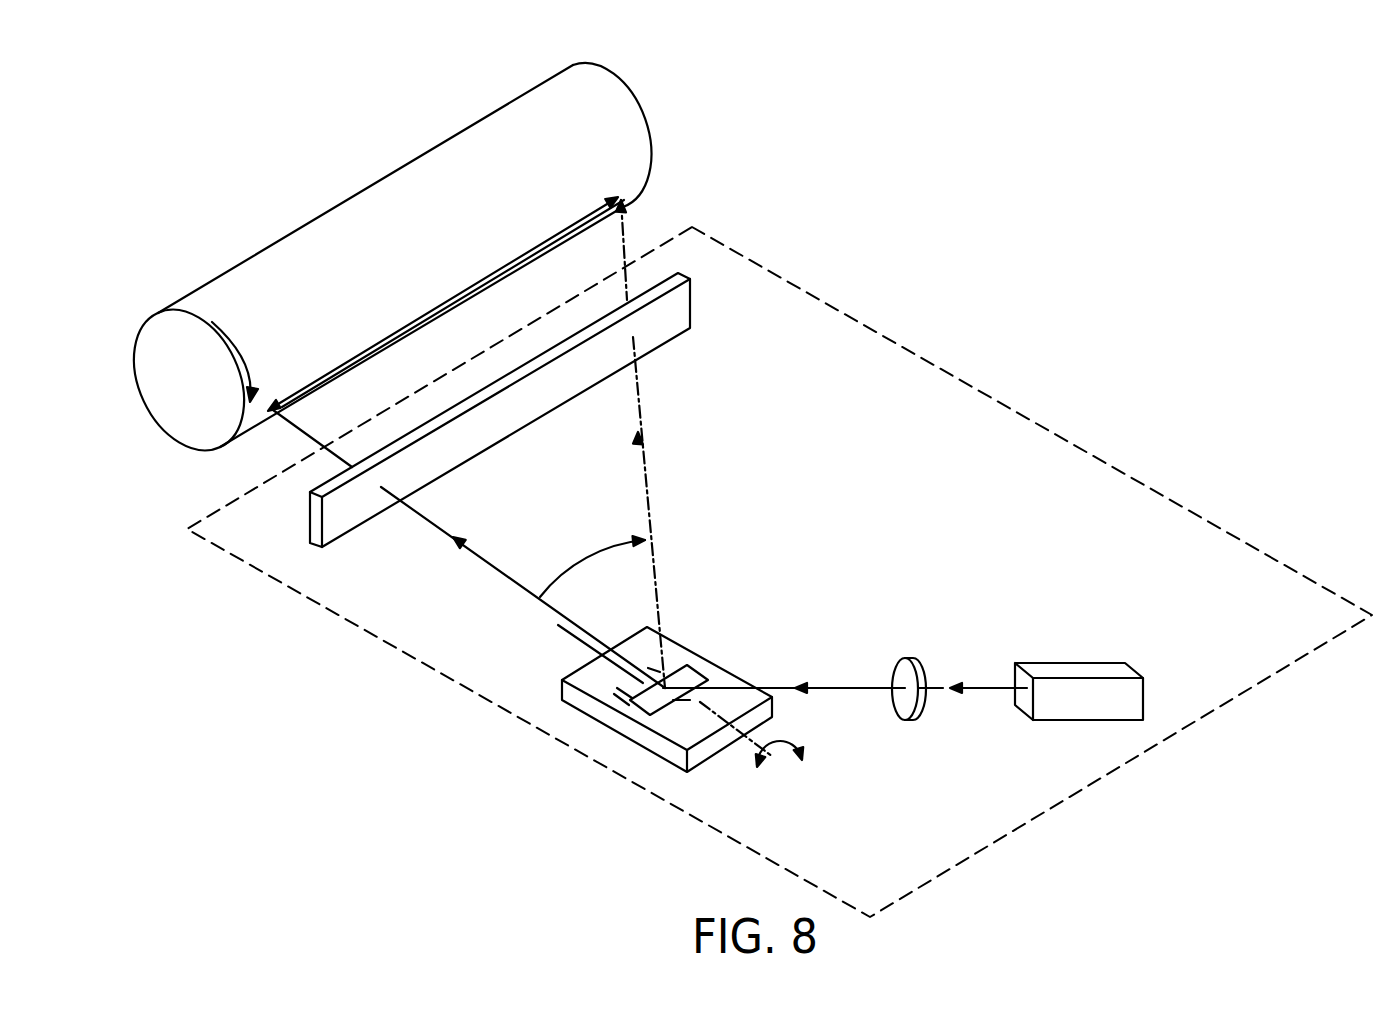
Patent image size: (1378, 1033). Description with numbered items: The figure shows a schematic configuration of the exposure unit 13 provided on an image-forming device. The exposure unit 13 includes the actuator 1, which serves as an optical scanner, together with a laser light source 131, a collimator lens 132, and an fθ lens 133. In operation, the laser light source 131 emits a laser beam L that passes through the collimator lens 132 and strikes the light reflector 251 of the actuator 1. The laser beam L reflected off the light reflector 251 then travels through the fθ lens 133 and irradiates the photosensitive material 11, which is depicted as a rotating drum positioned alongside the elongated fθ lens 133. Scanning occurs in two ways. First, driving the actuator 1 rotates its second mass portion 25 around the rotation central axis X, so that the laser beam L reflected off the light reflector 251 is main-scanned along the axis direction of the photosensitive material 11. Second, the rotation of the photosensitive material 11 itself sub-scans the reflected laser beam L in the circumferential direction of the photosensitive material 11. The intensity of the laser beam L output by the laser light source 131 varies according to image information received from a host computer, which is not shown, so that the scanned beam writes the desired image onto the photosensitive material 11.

The actuator 1 is at (700, 650).
The photosensitive material 11 is at (623, 125).
The exposure unit 13 is at (908, 347).
The laser light source 131 is at (1070, 670).
The collimator lens 132 is at (918, 660).
The fθ lens 133 is at (668, 325).
The second mass portion 25 is at (657, 715).
The light reflector 251 is at (617, 688).
The laser beam L is at (482, 555).
The rotation central axis X is at (790, 765).